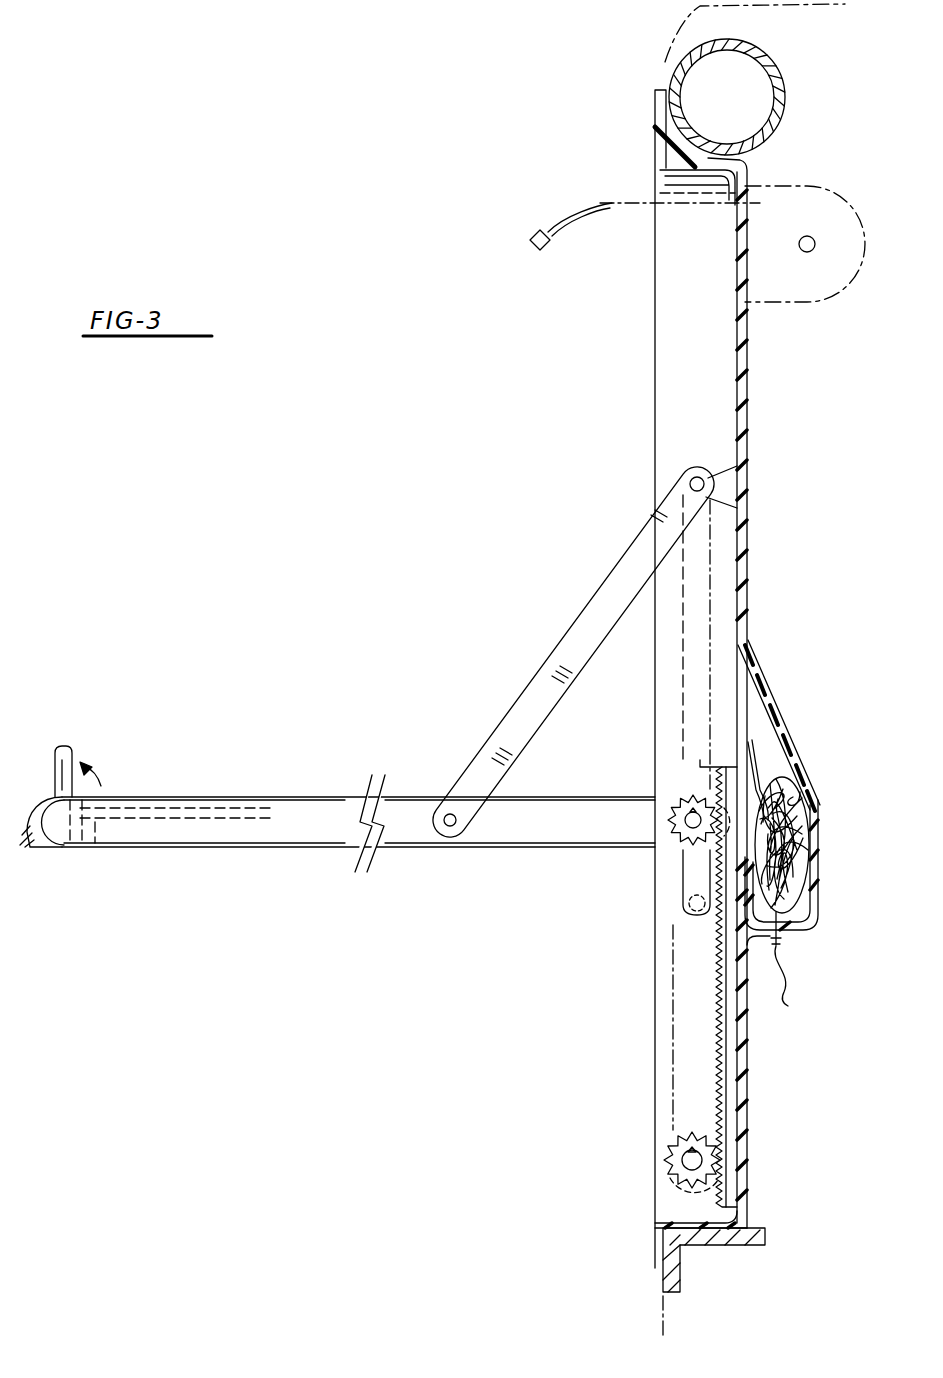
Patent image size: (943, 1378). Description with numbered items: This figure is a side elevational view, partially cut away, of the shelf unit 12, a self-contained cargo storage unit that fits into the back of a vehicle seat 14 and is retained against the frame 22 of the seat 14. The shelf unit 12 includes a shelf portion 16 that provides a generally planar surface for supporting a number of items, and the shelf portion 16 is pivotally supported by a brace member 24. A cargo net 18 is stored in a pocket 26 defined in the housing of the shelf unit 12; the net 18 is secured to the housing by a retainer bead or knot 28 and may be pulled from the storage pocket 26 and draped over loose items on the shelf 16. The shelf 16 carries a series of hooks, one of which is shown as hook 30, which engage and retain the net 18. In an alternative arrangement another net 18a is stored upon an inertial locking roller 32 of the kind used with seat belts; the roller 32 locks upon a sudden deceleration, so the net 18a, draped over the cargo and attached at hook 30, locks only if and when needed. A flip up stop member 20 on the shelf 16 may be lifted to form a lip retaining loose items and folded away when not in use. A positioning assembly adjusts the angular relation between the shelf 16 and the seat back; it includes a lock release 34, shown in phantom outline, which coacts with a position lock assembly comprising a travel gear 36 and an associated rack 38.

The shelf unit 12 is at (174, 718).
The vehicle seat 14 is at (700, 6).
The shelf portion 16 is at (326, 805).
The cargo net 18 is at (790, 800).
The net 18a is at (612, 203).
The flip up stop member 20 is at (66, 746).
The frame 22 is at (672, 72).
The brace member 24 is at (605, 598).
The pocket 26 is at (752, 702).
The retainer bead or knot 28 is at (798, 981).
The hook 30 is at (37, 848).
The inertial locking roller 32 is at (820, 186).
The lock release 34 is at (98, 826).
The travel gear 36 is at (690, 822).
The rack 38 is at (720, 1050).